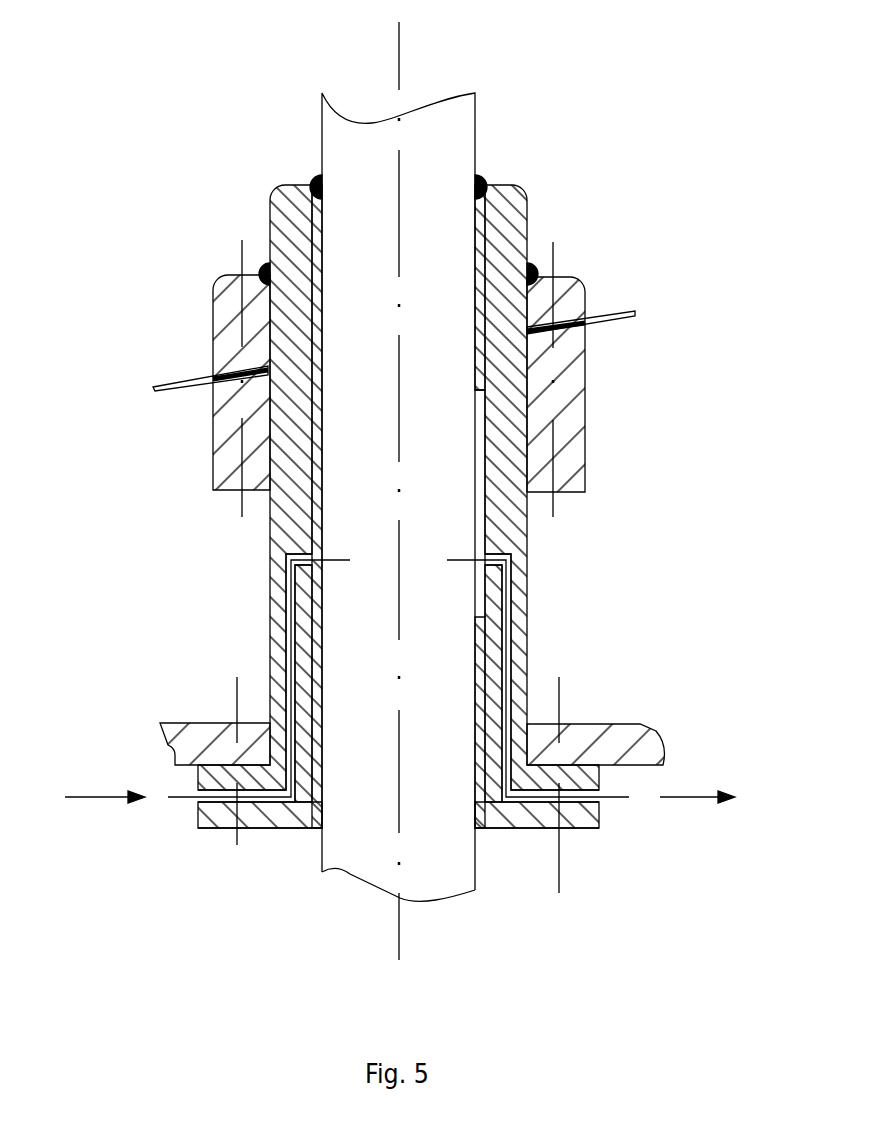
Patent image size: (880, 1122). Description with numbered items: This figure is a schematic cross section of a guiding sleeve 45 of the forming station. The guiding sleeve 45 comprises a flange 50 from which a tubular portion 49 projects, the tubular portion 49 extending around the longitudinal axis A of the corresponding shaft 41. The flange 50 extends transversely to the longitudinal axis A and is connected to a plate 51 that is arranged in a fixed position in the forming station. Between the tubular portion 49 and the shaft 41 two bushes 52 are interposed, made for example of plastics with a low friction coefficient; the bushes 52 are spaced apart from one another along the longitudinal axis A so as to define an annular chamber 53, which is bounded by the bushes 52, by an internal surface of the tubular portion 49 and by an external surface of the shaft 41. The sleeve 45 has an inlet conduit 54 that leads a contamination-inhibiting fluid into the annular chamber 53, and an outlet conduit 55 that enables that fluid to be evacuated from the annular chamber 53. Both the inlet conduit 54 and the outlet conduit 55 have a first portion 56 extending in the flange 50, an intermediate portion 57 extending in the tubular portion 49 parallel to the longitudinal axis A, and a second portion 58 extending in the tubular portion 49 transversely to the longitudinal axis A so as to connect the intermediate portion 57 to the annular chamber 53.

The longitudinal axis A is at (455, 37).
The shaft 41 is at (449, 148).
The guiding sleeve 45 is at (525, 547).
The tubular portion 49 is at (290, 523).
The flange 50 is at (528, 828).
The plate 51 is at (615, 723).
The bushes 52 is at (477, 245).
The annular chamber 53 is at (480, 507).
The inlet conduit 54 is at (285, 627).
The outlet conduit 55 is at (505, 617).
The first portion 56 is at (218, 807).
The intermediate portion 57 is at (288, 662).
The second portion 58 is at (297, 572).